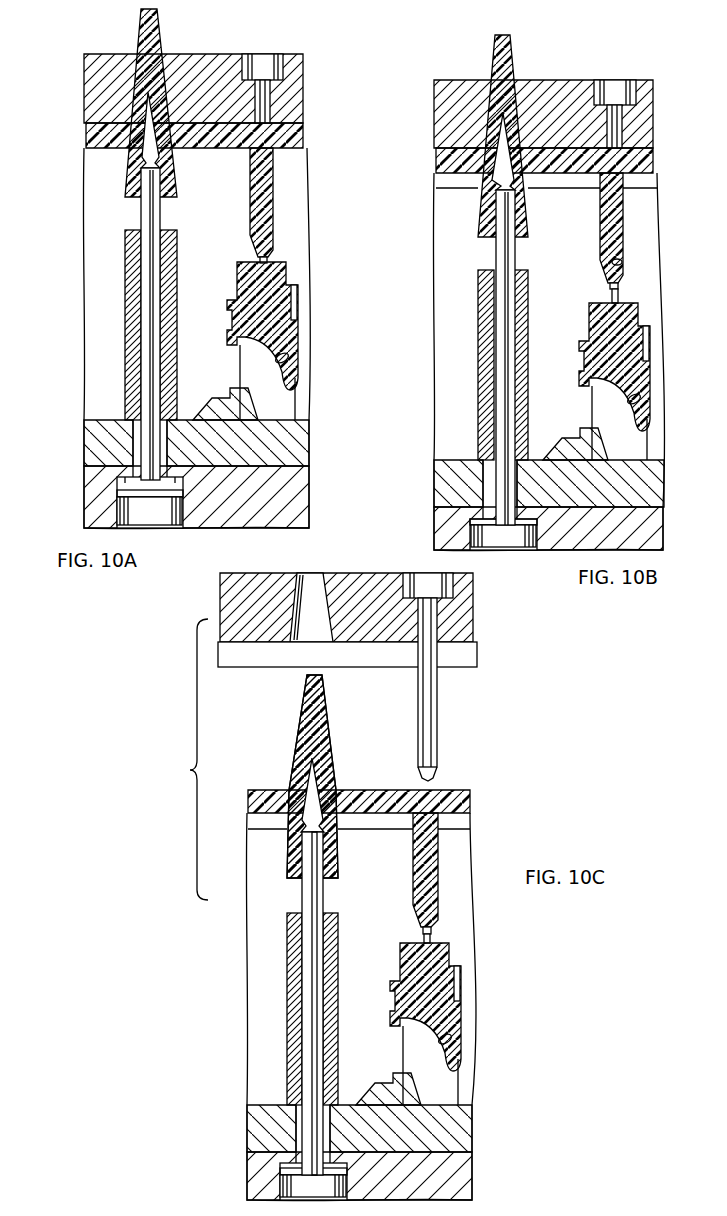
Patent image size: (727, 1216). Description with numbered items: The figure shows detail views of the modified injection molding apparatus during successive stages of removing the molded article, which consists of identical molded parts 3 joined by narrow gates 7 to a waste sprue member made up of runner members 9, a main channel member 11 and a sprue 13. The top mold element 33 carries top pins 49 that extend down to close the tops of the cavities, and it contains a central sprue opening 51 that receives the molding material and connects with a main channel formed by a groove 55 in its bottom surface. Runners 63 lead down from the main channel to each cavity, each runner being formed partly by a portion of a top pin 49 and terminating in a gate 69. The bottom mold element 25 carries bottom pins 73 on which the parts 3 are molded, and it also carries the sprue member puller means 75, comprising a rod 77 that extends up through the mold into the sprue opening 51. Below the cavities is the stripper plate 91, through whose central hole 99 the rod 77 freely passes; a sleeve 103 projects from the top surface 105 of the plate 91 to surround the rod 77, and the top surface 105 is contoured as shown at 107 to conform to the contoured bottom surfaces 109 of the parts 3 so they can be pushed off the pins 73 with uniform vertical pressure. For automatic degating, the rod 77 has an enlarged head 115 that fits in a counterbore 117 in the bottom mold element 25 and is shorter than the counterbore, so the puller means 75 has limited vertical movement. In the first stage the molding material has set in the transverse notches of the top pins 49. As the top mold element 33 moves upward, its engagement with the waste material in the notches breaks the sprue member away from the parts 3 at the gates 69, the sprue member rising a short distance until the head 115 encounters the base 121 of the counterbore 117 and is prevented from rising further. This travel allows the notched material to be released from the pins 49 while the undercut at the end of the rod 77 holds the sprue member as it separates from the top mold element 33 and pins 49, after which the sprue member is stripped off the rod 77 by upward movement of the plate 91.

In FIG. 10A, the molded parts 3 is at (300, 315).
In FIG. 10B, the molded parts 3 is at (652, 368).
In FIG. 10C, the molded parts 3 is at (465, 995).
In FIG. 10A, the gates 7 is at (268, 258).
In FIG. 10B, the gates 7 is at (610, 285).
In FIG. 10C, the gates 7 is at (430, 936).
In FIG. 10A, the runner members 9 is at (272, 185).
In FIG. 10B, the runner members 9 is at (625, 212).
In FIG. 10C, the runner members 9 is at (435, 860).
In FIG. 10A, the main channel member 11 is at (297, 128).
In FIG. 10B, the main channel member 11 is at (655, 162).
In FIG. 10A, the sprue 13 is at (160, 30).
In FIG. 10B, the sprue 13 is at (515, 55).
In FIG. 10C, the sprue 13 is at (323, 703).
In FIG. 10A, the bottom mold element 25 is at (310, 505).
In FIG. 10B, the bottom mold element 25 is at (664, 532).
In FIG. 10C, the bottom mold element 25 is at (473, 1172).
In FIG. 10A, the top mold element 33 is at (105, 60).
In FIG. 10B, the top mold element 33 is at (457, 82).
In FIG. 10C, the top mold element 33 is at (471, 616).
In FIG. 10A, the top pins 49 is at (267, 98).
In FIG. 10B, the top pins 49 is at (622, 122).
In FIG. 10C, the top pins 49 is at (438, 702).
In FIG. 10C, the central sprue opening 51 is at (306, 575).
In FIG. 10C, the groove 55 is at (471, 648).
In FIG. 10B, the runners 63 is at (621, 261).
In FIG. 10B, the gate 69 is at (620, 297).
In FIG. 10A, the bottom pins 73 is at (290, 398).
In FIG. 10B, the bottom pins 73 is at (645, 437).
In FIG. 10C, the bottom pins 73 is at (460, 1084).
In FIG. 10C, the sprue member puller means 75 is at (304, 948).
In FIG. 10A, the rod 77 is at (163, 208).
In FIG. 10C, the rod 77 is at (325, 894).
In FIG. 10A, the stripper plate 91 is at (307, 437).
In FIG. 10B, the stripper plate 91 is at (664, 487).
In FIG. 10C, the stripper plate 91 is at (473, 1126).
In FIG. 10A, the central hole 99 is at (136, 446).
In FIG. 10B, the central hole 99 is at (484, 491).
In FIG. 10C, the central hole 99 is at (298, 1128).
In FIG. 10A, the sleeve 103 is at (125, 252).
In FIG. 10C, the sleeve 103 is at (288, 990).
In FIG. 10A, the top surface 105 is at (97, 420).
In FIG. 10B, the top surface 105 is at (446, 460).
In FIG. 10C, the top surface 105 is at (257, 1105).
In FIG. 10A, the contour 107 is at (221, 392).
In FIG. 10B, the contour 107 is at (586, 433).
In FIG. 10C, the contour 107 is at (386, 1078).
In FIG. 10A, the contoured bottom surfaces 109 is at (287, 357).
In FIG. 10B, the contoured bottom surfaces 109 is at (639, 398).
In FIG. 10C, the contoured bottom surfaces 109 is at (450, 1040).
In FIG. 10A, the enlarged head 115 is at (130, 507).
In FIG. 10B, the enlarged head 115 is at (508, 547).
In FIG. 10C, the enlarged head 115 is at (305, 1178).
In FIG. 10A, the counterbore 117 is at (183, 505).
In FIG. 10B, the counterbore 117 is at (531, 552).
In FIG. 10C, the counterbore 117 is at (283, 1186).
In FIG. 10A, the base 121 is at (125, 490).
In FIG. 10B, the base 121 is at (472, 534).
In FIG. 10C, the base 121 is at (281, 1178).